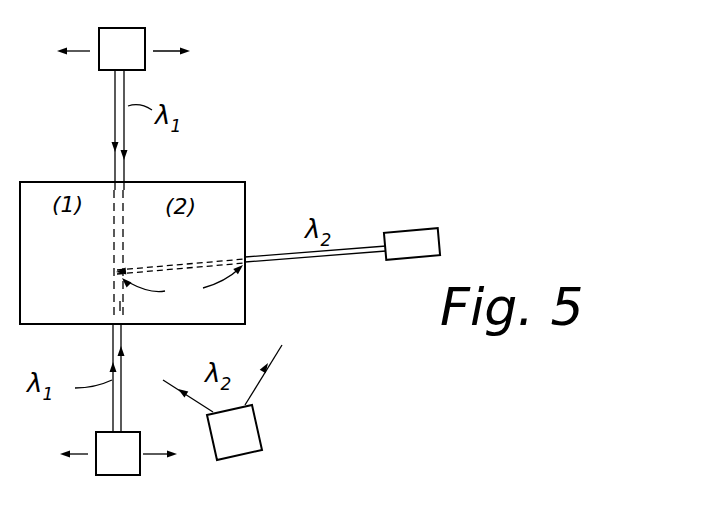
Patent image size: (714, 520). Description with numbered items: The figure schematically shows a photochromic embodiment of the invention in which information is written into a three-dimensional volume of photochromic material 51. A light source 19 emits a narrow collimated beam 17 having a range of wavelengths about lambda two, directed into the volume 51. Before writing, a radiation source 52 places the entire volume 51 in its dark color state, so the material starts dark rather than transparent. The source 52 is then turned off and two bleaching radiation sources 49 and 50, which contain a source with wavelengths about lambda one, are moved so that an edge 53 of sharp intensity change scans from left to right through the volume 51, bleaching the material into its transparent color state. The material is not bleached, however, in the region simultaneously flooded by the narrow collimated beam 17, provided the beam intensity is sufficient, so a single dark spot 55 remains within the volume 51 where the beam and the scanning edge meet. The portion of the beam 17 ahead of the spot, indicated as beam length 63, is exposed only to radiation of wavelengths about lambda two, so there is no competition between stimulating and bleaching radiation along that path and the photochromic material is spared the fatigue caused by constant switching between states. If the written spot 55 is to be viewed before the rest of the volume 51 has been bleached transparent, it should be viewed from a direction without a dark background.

The narrow collimated beam 17 is at (355, 247).
The light source 19 is at (418, 238).
The bleaching radiation source 49 is at (138, 466).
The bleaching radiation source 50 is at (141, 35).
The volume of photochromic material 51 is at (238, 209).
The radiation source 52 is at (250, 437).
The edge of sharp intensity change 53 is at (121, 306).
The dark spot 55 is at (121, 268).
The beam length 63 is at (183, 283).